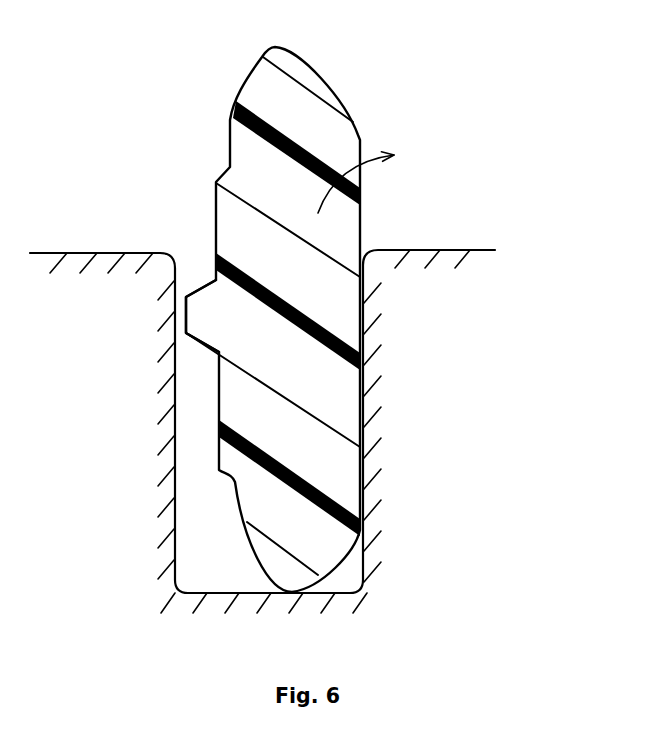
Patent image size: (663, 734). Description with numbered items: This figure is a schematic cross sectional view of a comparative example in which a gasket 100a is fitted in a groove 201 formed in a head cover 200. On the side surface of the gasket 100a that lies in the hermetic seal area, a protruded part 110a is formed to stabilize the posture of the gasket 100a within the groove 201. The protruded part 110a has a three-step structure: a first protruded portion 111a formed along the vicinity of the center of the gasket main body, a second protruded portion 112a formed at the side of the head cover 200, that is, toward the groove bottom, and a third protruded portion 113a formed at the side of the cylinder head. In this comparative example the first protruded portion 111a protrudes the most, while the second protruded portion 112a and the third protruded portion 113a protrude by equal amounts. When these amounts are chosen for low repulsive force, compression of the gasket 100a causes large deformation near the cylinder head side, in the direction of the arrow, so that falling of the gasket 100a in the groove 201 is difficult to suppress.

The gasket 100a is at (292, 316).
The protruded part 110a is at (206, 319).
The first protruded portion 111a is at (135, 316).
The second protruded portion 112a is at (220, 398).
The third protruded portion 113a is at (212, 230).
The head cover 200 is at (292, 396).
The groove 201 is at (173, 540).